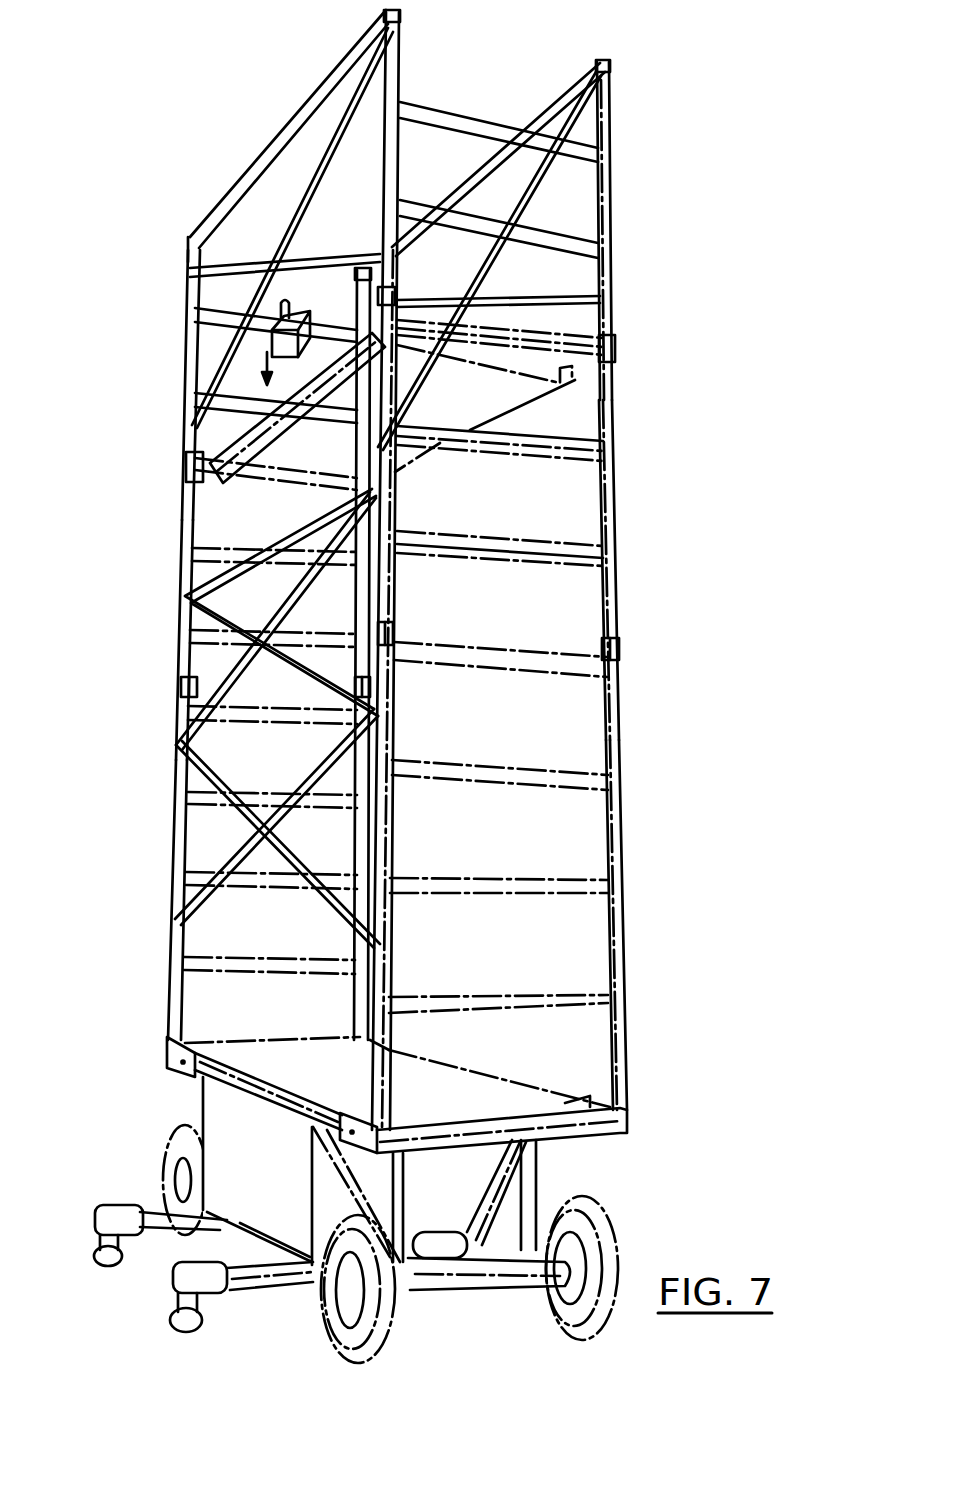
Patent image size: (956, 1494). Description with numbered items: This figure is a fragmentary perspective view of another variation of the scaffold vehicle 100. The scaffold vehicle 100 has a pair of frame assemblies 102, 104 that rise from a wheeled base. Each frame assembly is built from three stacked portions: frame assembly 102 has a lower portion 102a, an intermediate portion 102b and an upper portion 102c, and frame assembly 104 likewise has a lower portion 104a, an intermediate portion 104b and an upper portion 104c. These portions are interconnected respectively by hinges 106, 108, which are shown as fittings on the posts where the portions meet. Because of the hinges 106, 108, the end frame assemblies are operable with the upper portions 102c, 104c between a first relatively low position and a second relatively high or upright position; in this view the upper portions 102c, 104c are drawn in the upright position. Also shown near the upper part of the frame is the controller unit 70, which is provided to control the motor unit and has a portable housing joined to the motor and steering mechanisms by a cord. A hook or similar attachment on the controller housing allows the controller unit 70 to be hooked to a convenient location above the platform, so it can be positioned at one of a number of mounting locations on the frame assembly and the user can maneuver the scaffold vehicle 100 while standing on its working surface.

The scaffold vehicle 100 is at (704, 178).
The frame assembly 102 is at (150, 342).
The lower portion 102a is at (180, 822).
The intermediate portion 102b is at (186, 633).
The upper portion 102c is at (188, 298).
The frame assembly 104 is at (667, 277).
The lower portion 104a is at (620, 812).
The intermediate portion 104b is at (617, 503).
The upper portion 104c is at (606, 142).
The hinges 106 is at (619, 647).
The hinges 108 is at (613, 347).
The controller unit 70 is at (270, 338).